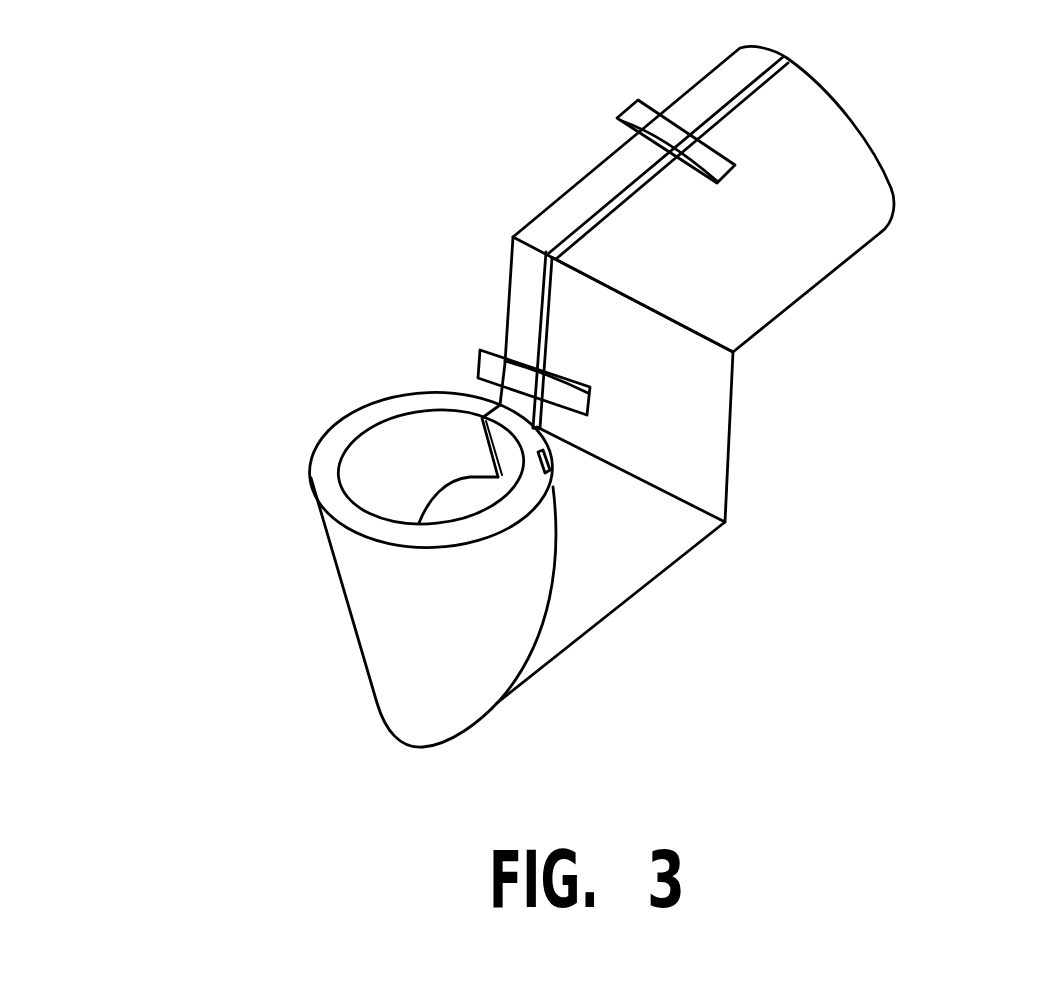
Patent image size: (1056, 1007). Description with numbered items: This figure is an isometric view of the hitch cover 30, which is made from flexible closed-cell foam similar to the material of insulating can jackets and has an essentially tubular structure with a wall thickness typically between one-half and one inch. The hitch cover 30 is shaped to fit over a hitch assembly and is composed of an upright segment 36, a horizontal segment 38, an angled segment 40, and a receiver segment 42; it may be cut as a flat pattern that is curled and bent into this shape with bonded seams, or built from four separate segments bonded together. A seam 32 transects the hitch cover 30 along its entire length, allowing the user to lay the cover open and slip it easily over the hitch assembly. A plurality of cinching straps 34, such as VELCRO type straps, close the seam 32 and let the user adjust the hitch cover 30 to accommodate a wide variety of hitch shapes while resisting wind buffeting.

The hitch cover 30 is at (855, 603).
The seam 32 is at (580, 227).
The cinching straps 34 is at (627, 110).
The upright segment 36 is at (342, 605).
The horizontal segment 38 is at (628, 603).
The angled segment 40 is at (733, 438).
The receiver segment 42 is at (830, 275).